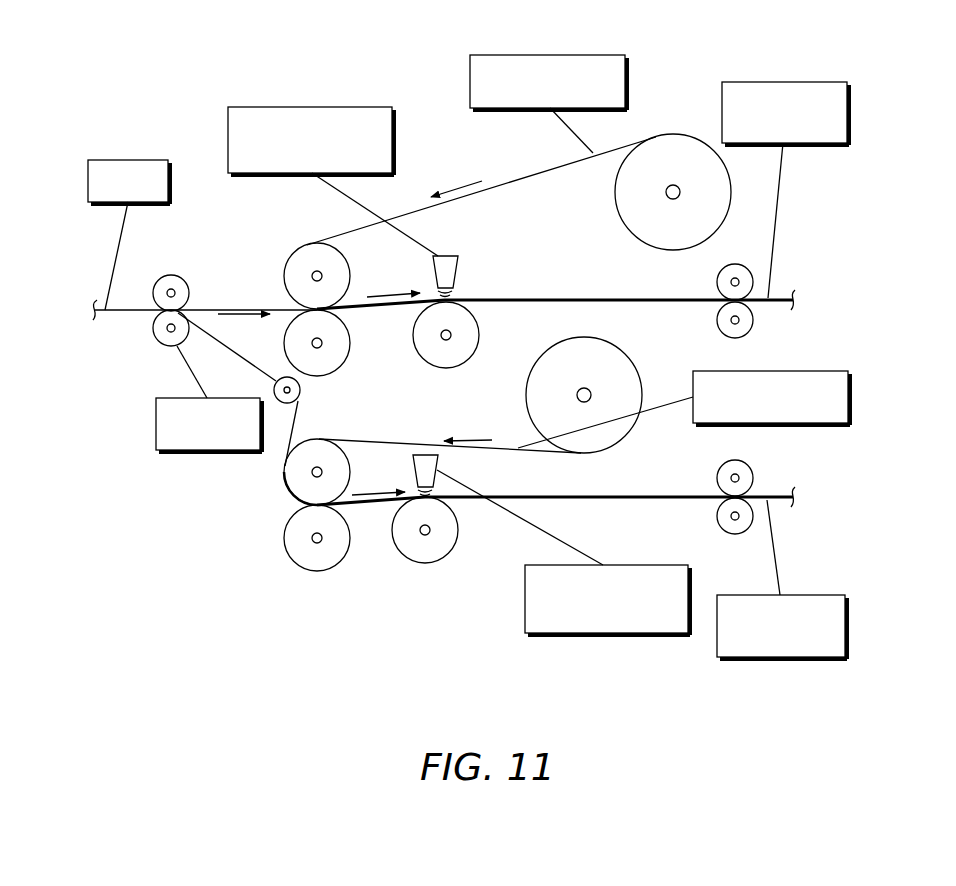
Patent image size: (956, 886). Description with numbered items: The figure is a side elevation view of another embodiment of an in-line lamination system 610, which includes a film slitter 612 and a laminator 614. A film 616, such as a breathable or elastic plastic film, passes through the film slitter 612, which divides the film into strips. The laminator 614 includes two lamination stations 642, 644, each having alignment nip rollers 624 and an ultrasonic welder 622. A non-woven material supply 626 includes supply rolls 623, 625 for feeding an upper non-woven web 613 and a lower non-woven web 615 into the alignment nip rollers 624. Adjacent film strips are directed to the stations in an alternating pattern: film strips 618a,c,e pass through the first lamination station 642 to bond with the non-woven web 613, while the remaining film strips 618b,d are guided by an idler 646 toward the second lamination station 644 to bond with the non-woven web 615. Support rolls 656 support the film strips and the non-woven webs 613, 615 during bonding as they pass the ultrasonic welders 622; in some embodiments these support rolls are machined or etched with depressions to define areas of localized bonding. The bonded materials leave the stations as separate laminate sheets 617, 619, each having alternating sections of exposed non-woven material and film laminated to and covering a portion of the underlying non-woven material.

The in-line lamination system 610 is at (128, 72).
The film slitter 612 is at (156, 425).
The non-woven web 613 is at (554, 55).
The laminator 614 is at (221, 191).
The non-woven web 615 is at (785, 371).
The film 616 is at (149, 160).
The laminate sheet 617 is at (782, 82).
The film strips 618a,c,e is at (225, 301).
The film strips 618b,d is at (281, 443).
The laminate sheet 619 is at (770, 657).
The ultrasonic welder 622 is at (290, 107).
The supply roll 623 is at (666, 161).
The alignment nip rollers 624 is at (355, 359).
The supply roll 625 is at (626, 339).
The non-woven material supply 626 is at (688, 118).
The lamination station 642 is at (279, 252).
The lamination station 644 is at (263, 512).
The idler 646 is at (271, 383).
The support roll 656 is at (426, 368).